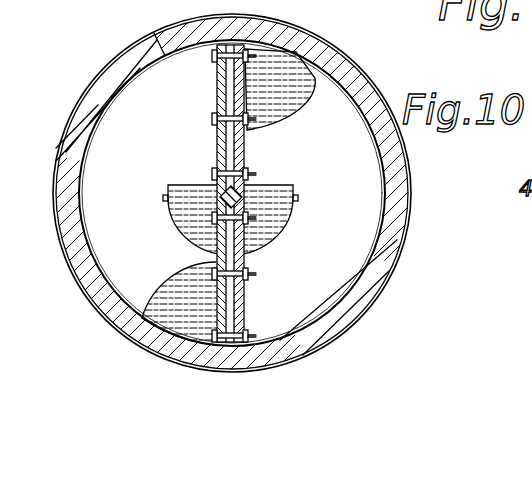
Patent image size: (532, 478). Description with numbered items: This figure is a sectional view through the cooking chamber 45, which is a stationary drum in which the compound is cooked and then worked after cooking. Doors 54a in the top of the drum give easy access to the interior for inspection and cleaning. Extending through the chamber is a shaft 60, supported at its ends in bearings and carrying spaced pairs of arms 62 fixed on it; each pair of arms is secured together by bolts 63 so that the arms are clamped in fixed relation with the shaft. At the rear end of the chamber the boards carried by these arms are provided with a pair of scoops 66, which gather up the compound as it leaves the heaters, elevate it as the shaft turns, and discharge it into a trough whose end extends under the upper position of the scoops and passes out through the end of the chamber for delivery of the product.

The cooking chamber 45 is at (350, 72).
The doors 54a is at (256, 15).
The shaft 60 is at (220, 190).
The arms 62 is at (246, 141).
The bolts 63 is at (247, 184).
The scoops 66 is at (313, 88).